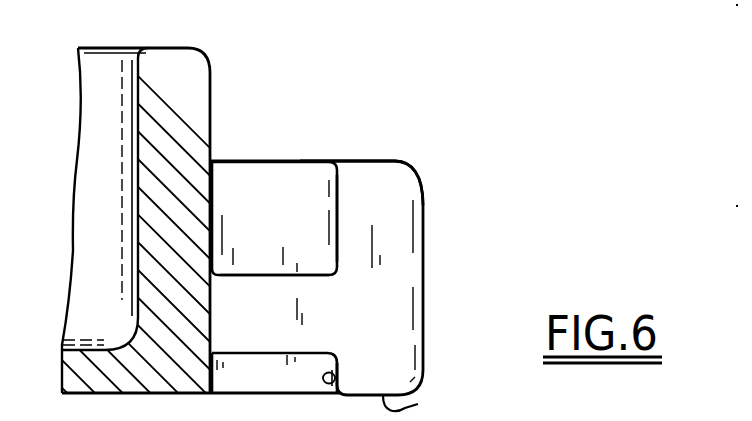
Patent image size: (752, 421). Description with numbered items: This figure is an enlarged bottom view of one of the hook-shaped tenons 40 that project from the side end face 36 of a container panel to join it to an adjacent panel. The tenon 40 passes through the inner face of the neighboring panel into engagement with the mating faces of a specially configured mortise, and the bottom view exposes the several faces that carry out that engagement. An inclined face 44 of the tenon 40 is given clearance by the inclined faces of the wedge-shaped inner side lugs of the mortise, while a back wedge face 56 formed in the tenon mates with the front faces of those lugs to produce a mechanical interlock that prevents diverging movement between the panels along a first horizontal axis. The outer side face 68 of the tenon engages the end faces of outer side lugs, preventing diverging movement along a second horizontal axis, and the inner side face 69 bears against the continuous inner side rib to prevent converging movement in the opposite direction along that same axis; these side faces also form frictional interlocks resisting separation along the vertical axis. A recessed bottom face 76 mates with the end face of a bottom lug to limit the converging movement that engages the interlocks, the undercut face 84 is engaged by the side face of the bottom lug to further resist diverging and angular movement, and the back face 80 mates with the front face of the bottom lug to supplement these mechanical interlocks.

The side end face 36 is at (211, 95).
The hook-shaped tenon 40 is at (424, 260).
The inclined face 44 is at (256, 372).
The back wedge face 56 is at (338, 368).
The outer side face 68 is at (315, 163).
The inner side face 69 is at (416, 406).
The recessed bottom face 76 is at (268, 184).
The back face 80 is at (334, 243).
The undercut face 84 is at (272, 272).